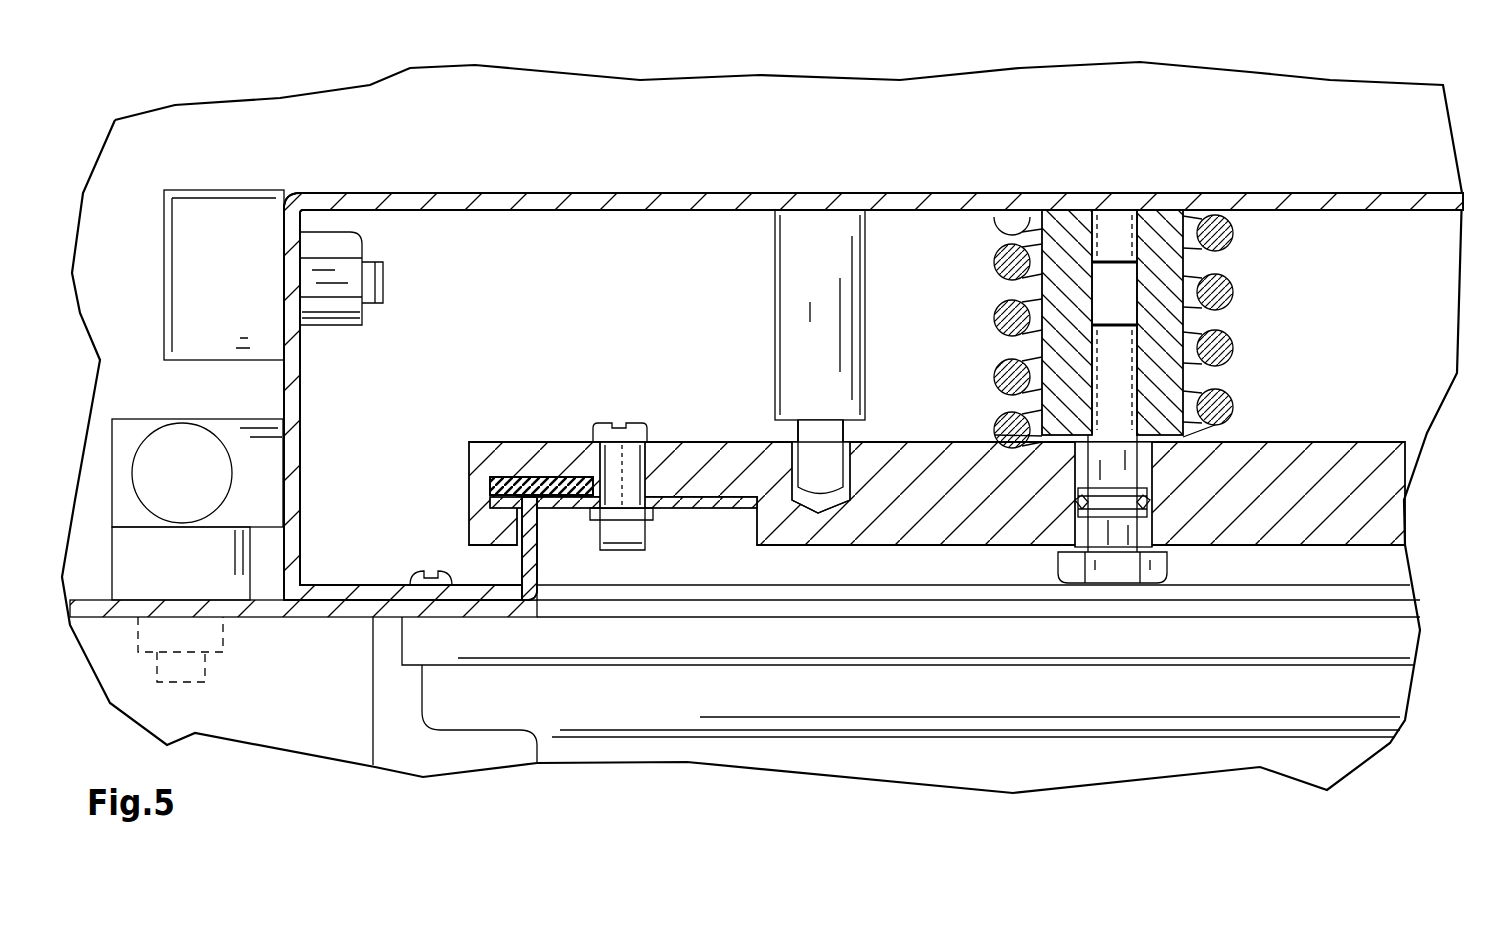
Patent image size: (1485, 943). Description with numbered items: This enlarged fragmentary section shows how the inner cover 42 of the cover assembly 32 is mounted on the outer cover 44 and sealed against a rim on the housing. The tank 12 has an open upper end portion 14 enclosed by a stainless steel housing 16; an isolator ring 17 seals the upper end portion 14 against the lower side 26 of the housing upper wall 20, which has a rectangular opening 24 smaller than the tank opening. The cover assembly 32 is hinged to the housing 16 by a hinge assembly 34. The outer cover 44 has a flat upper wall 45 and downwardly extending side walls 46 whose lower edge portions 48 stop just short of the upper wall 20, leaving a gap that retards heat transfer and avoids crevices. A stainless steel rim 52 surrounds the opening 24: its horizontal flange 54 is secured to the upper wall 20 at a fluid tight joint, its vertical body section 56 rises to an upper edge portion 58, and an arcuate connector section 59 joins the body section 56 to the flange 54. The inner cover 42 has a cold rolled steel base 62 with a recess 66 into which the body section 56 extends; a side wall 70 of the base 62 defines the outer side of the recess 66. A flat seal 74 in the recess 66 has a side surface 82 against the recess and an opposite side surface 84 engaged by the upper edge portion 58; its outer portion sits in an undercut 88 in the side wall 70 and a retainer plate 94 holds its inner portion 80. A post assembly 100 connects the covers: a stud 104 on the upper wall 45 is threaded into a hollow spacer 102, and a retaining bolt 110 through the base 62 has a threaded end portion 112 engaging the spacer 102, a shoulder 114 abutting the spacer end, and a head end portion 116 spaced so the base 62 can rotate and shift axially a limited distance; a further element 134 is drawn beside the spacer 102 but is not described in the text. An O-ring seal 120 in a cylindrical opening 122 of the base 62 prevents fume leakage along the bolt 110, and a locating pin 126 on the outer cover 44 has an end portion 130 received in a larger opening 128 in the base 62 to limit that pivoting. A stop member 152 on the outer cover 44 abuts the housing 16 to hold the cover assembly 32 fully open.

The tank 12 is at (607, 756).
The upper end portion 14 is at (478, 692).
The housing 16 is at (745, 665).
The isolator ring 17 is at (1300, 642).
The upper wall 20 is at (262, 608).
The rectangular opening 24 is at (708, 608).
The lower side surface 26 is at (98, 620).
The cover assembly 32 is at (873, 314).
The hinge assembly 34 is at (165, 476).
The inner cover 42 is at (1405, 503).
The outer cover 44 is at (873, 314).
The flat rectangular upper wall 45 is at (795, 193).
The side walls 46 is at (873, 342).
The lower edge portions 48 is at (284, 580).
The rim 52 is at (486, 578).
The horizontal flange 54 is at (445, 590).
The vertical body section 56 is at (565, 599).
The upper edge portion 58 is at (556, 599).
The arcuate connector section 59 is at (540, 607).
The base 62 is at (917, 468).
The rectangular recess 66 is at (713, 530).
The side wall 70 is at (492, 520).
The seal 74 is at (505, 402).
The inner portion 80 is at (602, 438).
The flat rectangular side surface 82 is at (505, 431).
The opposite side surface 84 is at (505, 435).
The rectangular undercut 88 is at (490, 489).
The retainer plate 94 is at (650, 485).
The post assembly 100 is at (1383, 192).
The spacer 102 is at (1092, 331).
The stud 104 is at (1110, 232).
The retaining bolt 110 is at (1093, 455).
The threaded end portion 112 is at (1091, 331).
The shoulder 114 is at (1093, 396).
The head end portion 116 is at (1089, 585).
The O-ring seal 120 is at (1093, 396).
The cylindrical opening 122 is at (1093, 396).
The locating pin 126 is at (803, 270).
The cylindrical opening 128 is at (852, 463).
The end portion 130 is at (820, 435).
The spring coil 134 is at (990, 272).
The stop member 152 is at (230, 222).